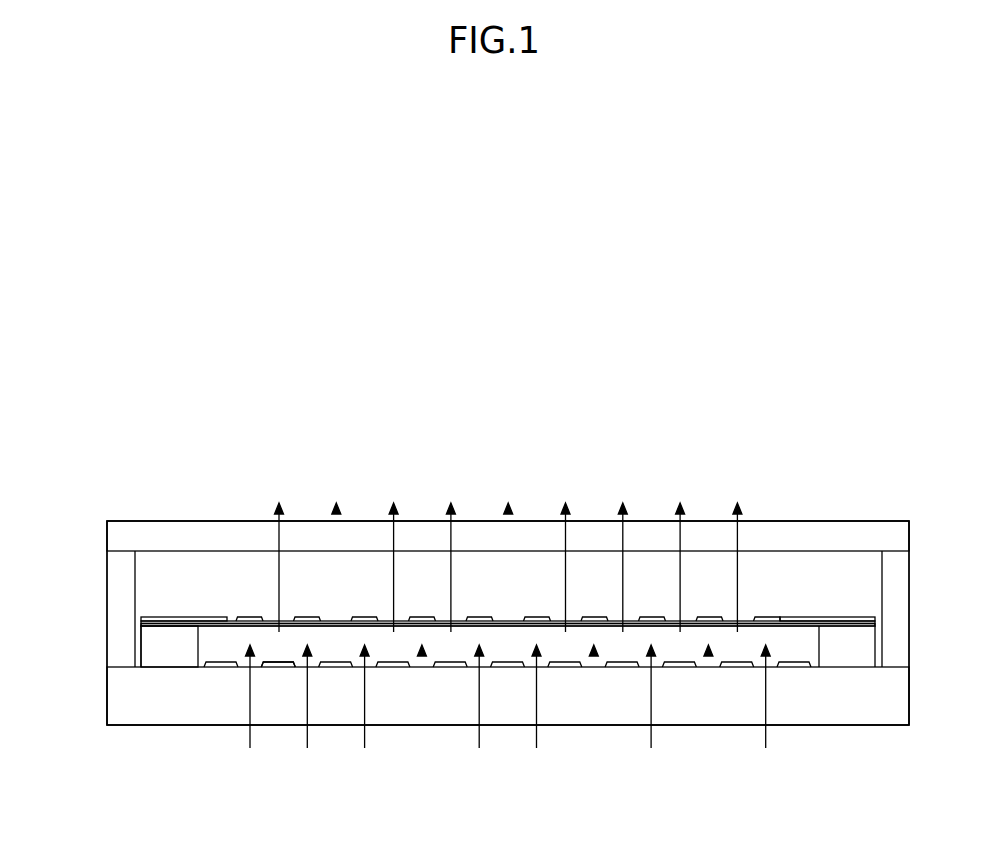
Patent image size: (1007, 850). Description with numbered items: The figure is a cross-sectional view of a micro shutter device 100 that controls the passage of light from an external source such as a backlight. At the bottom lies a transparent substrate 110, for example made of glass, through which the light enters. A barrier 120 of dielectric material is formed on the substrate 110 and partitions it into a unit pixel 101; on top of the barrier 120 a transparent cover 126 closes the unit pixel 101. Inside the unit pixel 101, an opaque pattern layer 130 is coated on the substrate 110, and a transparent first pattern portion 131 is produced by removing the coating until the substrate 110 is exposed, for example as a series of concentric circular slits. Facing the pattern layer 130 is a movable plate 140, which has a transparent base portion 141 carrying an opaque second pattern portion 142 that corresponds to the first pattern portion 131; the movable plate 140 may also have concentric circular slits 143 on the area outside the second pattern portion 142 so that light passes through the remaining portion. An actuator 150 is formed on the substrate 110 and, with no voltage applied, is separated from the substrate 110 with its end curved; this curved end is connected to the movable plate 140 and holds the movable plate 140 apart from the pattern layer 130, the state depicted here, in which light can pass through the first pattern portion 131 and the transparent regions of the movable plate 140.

The micro shutter device 100 is at (112, 485).
The unit pixel 101 is at (235, 573).
The substrate 110 is at (391, 713).
The barrier 120 is at (120, 638).
The cover 126 is at (304, 535).
The pattern layer 130 is at (218, 681).
The first pattern portion 131 is at (300, 668).
The movable plate 140 is at (551, 641).
The base portion 141 is at (692, 627).
The second pattern portion 142 is at (657, 617).
The concentric circular slits 143 is at (745, 617).
The actuator 150 is at (170, 652).